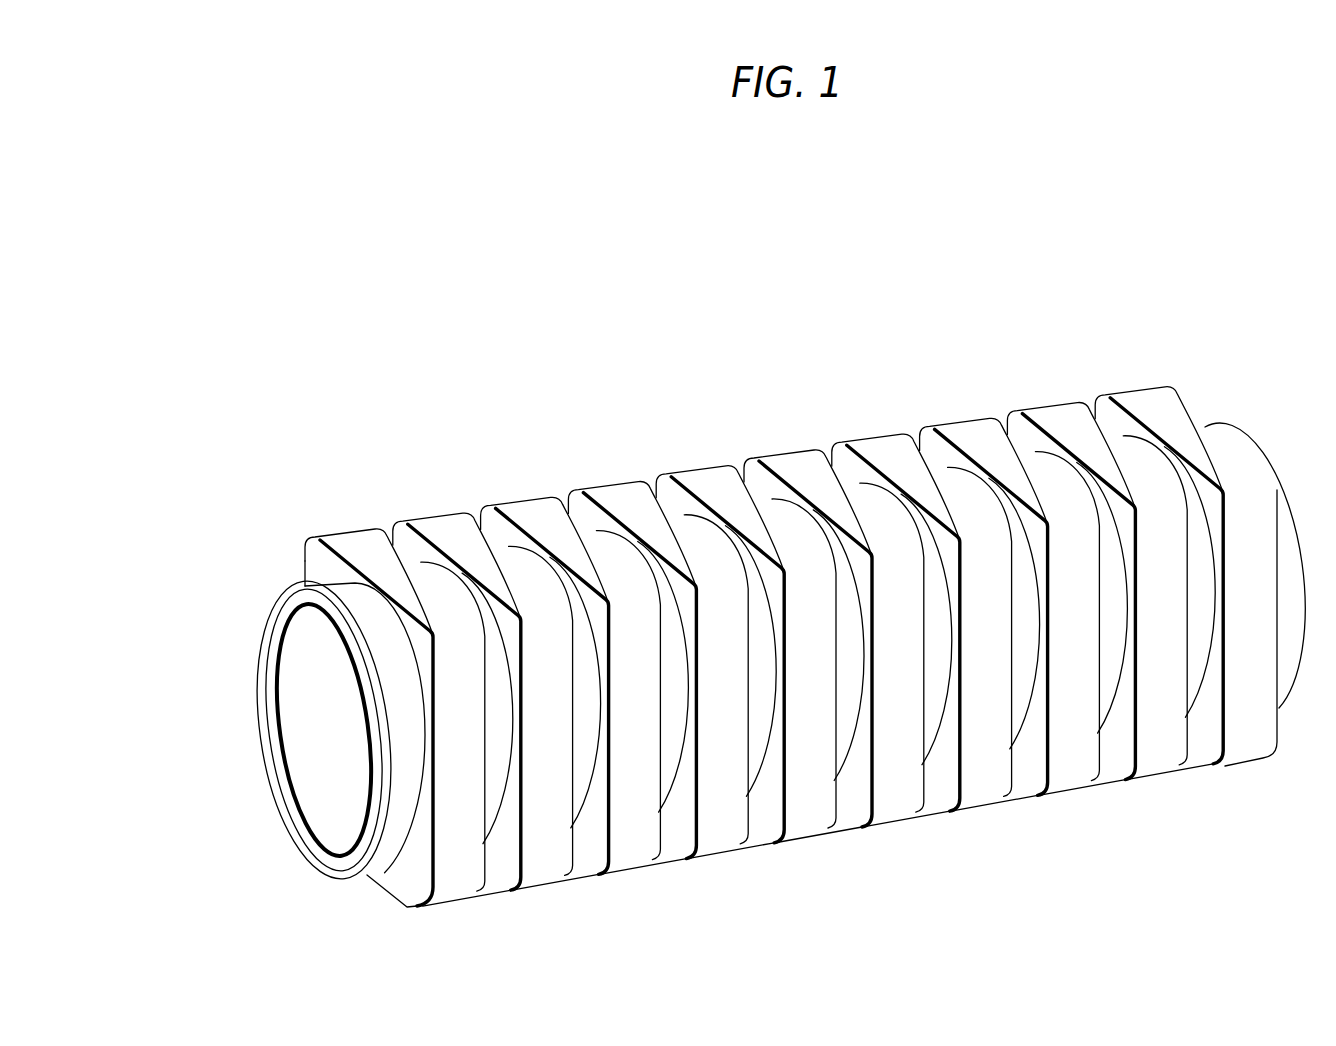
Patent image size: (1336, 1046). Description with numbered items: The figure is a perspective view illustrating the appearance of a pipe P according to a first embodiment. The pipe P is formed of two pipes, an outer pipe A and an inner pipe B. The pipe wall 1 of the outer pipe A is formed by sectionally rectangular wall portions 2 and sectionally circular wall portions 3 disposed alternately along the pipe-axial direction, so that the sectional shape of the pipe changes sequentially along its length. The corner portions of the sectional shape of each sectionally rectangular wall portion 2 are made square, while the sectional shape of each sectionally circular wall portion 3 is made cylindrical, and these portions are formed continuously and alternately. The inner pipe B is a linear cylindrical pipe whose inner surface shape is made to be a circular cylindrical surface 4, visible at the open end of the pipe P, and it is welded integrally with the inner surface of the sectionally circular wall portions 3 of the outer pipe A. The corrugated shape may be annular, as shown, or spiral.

The pipe wall 1 is at (985, 438).
The sectionally rectangular wall portion 2 is at (698, 480).
The sectionally circular wall portion 3 is at (875, 492).
The circular cylindrical surface 4 is at (294, 665).
The pipe P is at (466, 486).
The outer pipe A is at (259, 689).
The inner pipe B is at (276, 738).